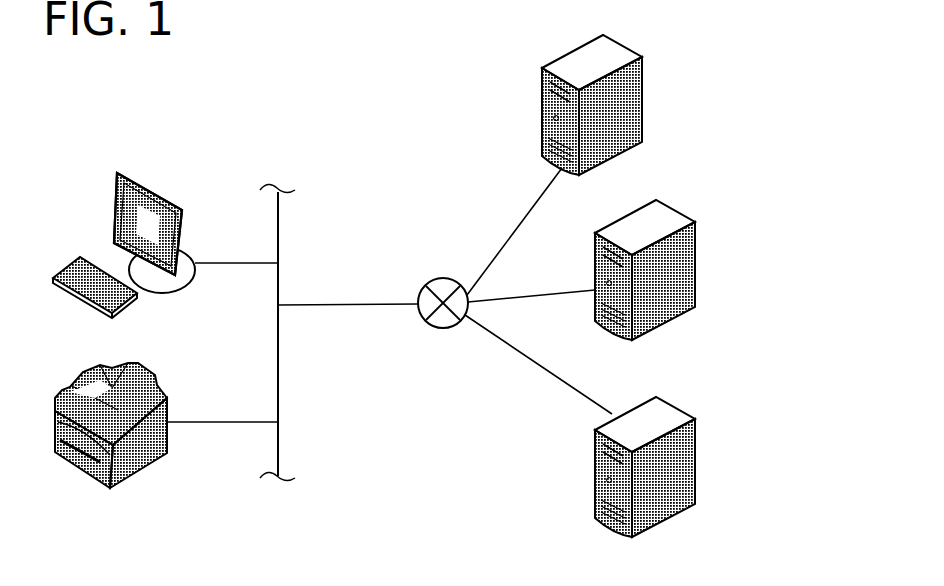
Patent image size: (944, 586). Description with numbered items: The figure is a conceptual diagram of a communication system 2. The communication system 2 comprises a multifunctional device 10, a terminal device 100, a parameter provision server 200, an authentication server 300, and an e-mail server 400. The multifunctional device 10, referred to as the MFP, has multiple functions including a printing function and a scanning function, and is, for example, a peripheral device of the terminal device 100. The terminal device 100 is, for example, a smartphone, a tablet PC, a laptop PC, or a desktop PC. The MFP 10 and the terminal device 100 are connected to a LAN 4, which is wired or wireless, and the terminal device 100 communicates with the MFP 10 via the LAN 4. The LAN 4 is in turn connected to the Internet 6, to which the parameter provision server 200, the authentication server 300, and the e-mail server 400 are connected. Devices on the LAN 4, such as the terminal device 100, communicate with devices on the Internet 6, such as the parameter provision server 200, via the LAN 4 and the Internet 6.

The communication system 2 is at (770, 51).
The LAN 4 is at (278, 388).
The Internet 6 is at (442, 279).
The multifunctional device 10 is at (156, 372).
The terminal device 100 is at (163, 184).
The parameter provision server 200 is at (643, 74).
The authentication server 300 is at (695, 245).
The e-mail server 400 is at (698, 452).